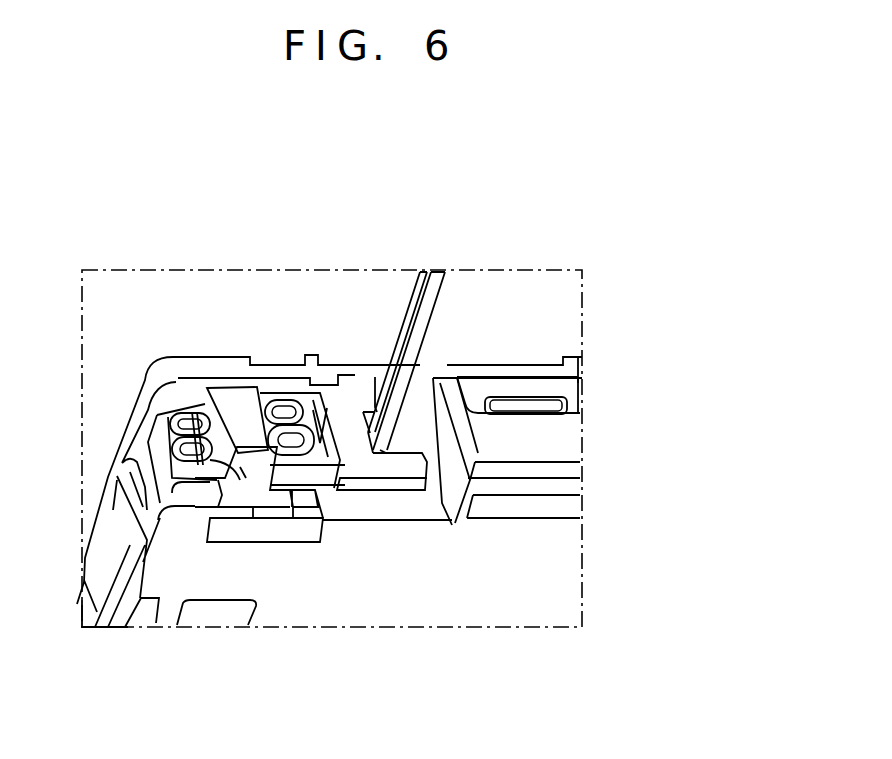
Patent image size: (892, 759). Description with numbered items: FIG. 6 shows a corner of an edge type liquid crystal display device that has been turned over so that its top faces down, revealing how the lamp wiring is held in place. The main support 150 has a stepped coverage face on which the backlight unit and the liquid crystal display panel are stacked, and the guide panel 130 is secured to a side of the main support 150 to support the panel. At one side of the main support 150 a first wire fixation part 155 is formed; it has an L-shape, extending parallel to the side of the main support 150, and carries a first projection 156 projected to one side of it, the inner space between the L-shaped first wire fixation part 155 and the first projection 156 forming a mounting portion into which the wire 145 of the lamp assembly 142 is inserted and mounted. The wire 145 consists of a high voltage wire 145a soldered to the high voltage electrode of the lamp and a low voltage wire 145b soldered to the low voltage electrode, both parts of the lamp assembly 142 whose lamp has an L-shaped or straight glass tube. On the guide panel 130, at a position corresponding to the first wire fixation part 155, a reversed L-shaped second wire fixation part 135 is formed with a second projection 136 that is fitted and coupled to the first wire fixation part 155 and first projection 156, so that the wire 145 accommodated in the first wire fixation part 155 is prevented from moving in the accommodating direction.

The guide panel 130 is at (223, 365).
The lamp assembly 142 is at (207, 407).
The first wire fixation part 155 is at (381, 465).
The first projection 156 is at (374, 407).
The second projection 136 is at (378, 380).
The wire 145 is at (508, 156).
The high voltage wire 145a is at (448, 282).
The low voltage wire 145b is at (431, 277).
The second wire fixation part 135 is at (430, 432).
The main support 150 is at (533, 440).